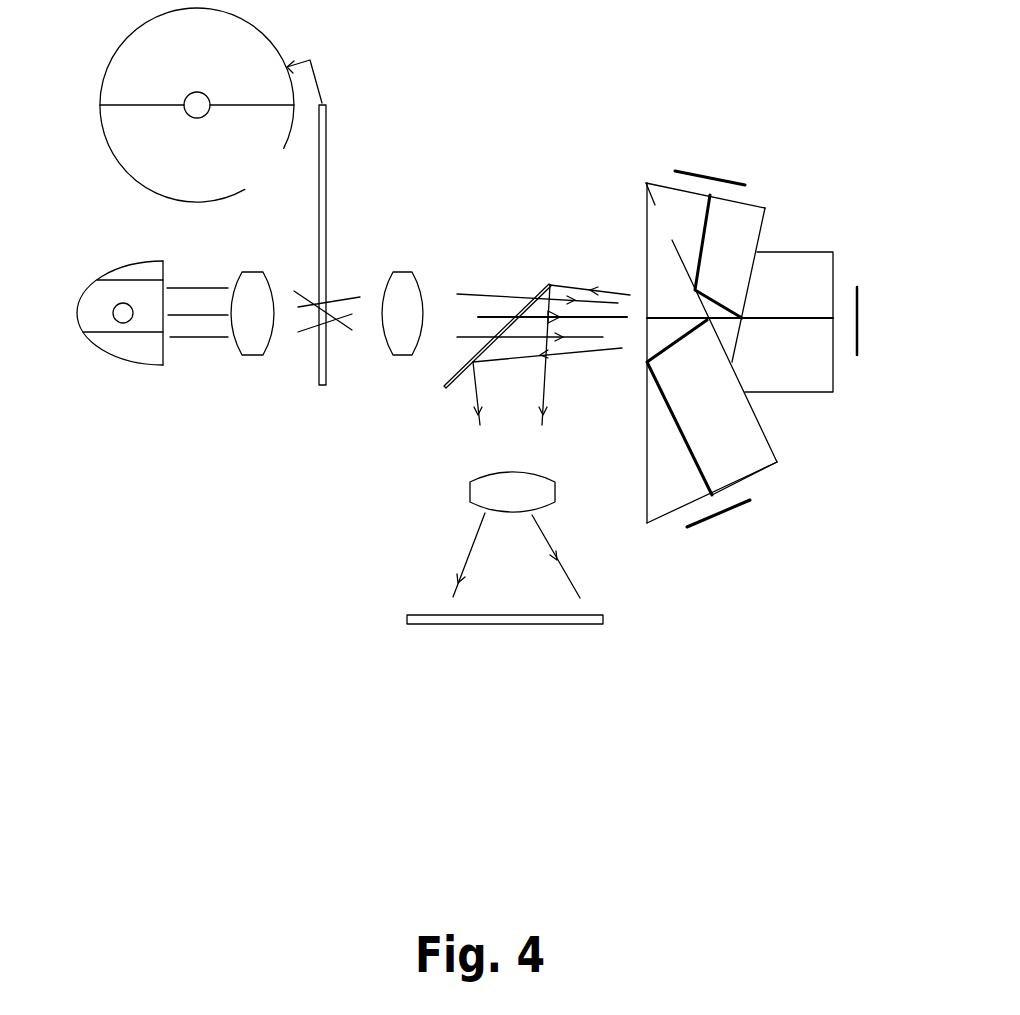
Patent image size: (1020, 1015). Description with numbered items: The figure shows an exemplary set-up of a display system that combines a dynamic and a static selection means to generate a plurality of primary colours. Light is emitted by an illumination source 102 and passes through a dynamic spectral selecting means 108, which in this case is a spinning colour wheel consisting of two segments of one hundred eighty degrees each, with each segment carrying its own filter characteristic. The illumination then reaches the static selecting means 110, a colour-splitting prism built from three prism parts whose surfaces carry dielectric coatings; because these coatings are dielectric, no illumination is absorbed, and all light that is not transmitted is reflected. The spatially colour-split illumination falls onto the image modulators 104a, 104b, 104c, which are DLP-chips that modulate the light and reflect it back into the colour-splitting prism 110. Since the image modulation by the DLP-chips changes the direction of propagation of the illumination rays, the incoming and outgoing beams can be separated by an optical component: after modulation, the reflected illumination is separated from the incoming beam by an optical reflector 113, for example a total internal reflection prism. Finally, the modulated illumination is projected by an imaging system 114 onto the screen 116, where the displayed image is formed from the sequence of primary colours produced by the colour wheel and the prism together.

The illumination source 102 is at (113, 306).
The dynamic spectral selecting means 108 is at (211, 105).
The static selecting means 110 is at (657, 240).
The image modulator 104a is at (700, 172).
The image modulator 104b is at (862, 305).
The image modulator 104c is at (732, 508).
The optical reflector 113 is at (545, 285).
The imaging system 114 is at (520, 487).
The screen 116 is at (408, 617).